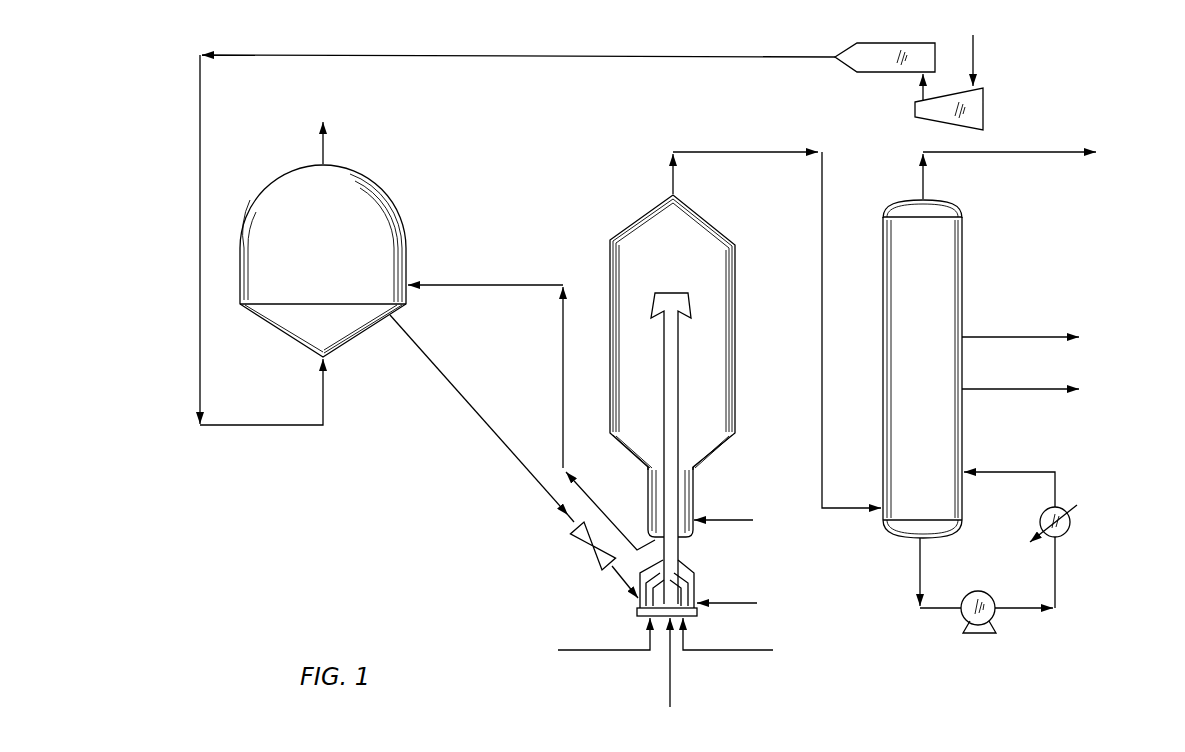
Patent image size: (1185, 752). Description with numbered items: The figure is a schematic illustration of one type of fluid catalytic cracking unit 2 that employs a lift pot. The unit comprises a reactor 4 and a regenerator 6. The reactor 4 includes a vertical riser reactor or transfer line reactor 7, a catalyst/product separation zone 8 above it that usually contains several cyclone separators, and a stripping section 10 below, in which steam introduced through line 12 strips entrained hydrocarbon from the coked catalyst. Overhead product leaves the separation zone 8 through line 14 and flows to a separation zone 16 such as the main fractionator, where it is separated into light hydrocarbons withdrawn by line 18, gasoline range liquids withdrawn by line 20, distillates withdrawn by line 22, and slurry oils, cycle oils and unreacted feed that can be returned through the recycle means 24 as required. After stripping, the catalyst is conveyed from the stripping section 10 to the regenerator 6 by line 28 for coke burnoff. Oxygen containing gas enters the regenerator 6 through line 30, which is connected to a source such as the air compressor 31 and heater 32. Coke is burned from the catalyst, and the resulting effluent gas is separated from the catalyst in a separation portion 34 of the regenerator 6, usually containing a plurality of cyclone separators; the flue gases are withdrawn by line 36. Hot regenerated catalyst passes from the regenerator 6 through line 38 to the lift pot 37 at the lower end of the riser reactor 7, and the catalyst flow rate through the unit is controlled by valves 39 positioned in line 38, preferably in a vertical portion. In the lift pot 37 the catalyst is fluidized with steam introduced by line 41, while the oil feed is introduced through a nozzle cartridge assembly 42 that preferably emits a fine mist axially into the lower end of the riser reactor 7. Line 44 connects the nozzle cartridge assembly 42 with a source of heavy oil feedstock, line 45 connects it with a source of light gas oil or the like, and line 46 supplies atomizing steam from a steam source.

The fluid catalytic cracking unit 2 is at (178, 468).
The reactor 4 is at (701, 332).
The regenerator 6 is at (346, 261).
The riser reactor 7 is at (680, 400).
The catalyst/product separation zone 8 is at (680, 264).
The stripping section 10 is at (696, 491).
The line 12 is at (738, 521).
The line 14 is at (738, 152).
The separation zone 16 is at (932, 298).
The line 18 is at (1017, 152).
The line 20 is at (1018, 337).
The line 22 is at (1018, 389).
The recycle means 24 is at (1095, 624).
The line 28 is at (508, 284).
The line 30 is at (490, 53).
The air compressor 31 is at (975, 60).
The heater 32 is at (884, 43).
The separation portion 34 is at (338, 251).
The line 36 is at (322, 137).
The lift pot 37 is at (700, 570).
The line 38 is at (466, 400).
The valves 39 is at (570, 548).
The line 41 is at (743, 603).
The nozzle cartridge assembly 42 is at (638, 603).
The line 44 is at (600, 651).
The line 45 is at (672, 680).
The line 46 is at (755, 651).